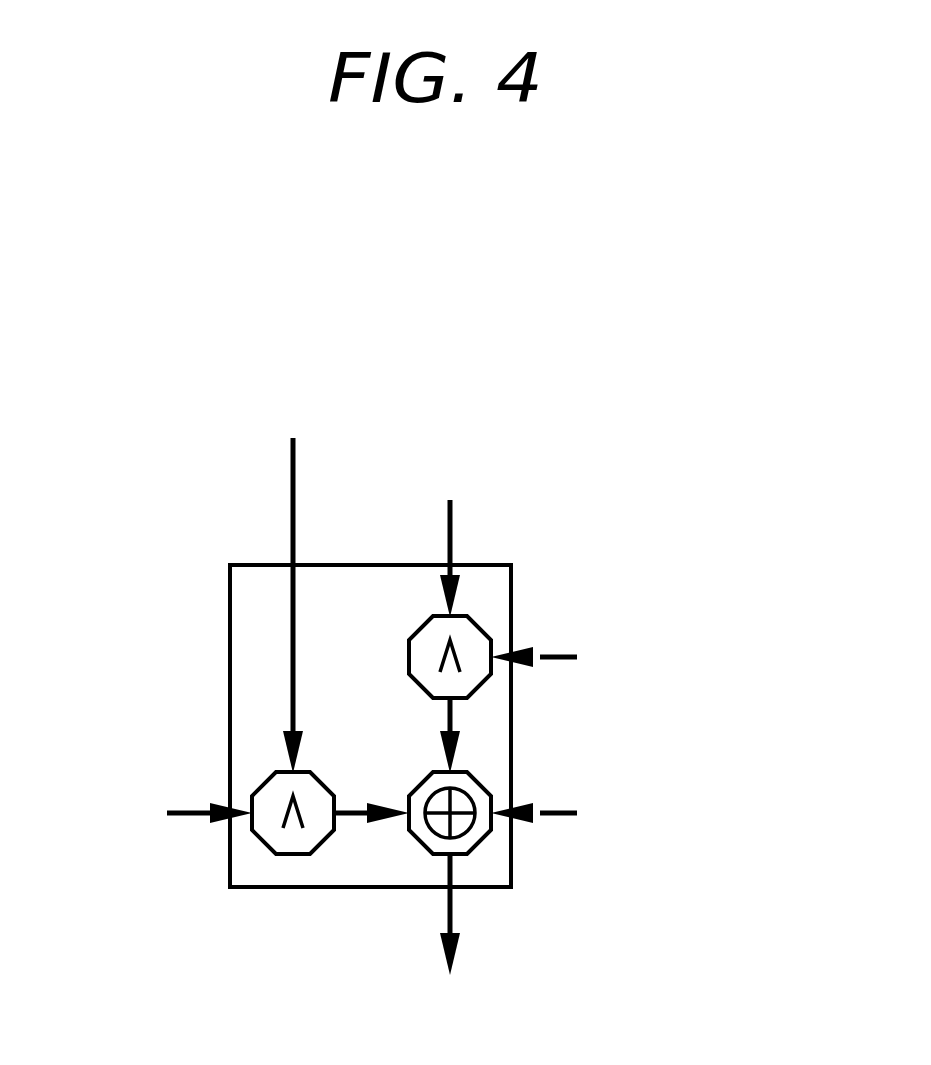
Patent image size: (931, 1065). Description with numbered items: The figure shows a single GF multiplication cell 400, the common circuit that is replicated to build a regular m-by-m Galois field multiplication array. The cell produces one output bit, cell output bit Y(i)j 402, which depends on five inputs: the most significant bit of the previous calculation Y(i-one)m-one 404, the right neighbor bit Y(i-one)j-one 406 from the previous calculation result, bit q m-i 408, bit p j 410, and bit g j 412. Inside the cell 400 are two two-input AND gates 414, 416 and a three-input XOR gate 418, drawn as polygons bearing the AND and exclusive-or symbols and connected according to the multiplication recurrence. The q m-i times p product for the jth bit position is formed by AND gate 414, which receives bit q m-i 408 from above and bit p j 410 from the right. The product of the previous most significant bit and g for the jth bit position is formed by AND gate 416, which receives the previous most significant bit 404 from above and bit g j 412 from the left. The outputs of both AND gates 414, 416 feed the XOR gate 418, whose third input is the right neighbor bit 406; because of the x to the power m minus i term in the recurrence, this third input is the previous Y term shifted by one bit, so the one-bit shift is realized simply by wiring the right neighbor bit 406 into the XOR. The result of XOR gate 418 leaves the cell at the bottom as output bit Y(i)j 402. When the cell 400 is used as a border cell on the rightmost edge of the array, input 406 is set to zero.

The GF multiplication cell 400 is at (588, 302).
The cell output bit Y(i)j 402 is at (453, 905).
The most significant bit of the previous calculation Y(i-1)m-1 404 is at (291, 538).
The right neighbor bit Y(i-1)j-1 406 is at (555, 816).
The bit q m-i 408 is at (452, 548).
The bit p j 410 is at (555, 655).
The bit g j 412 is at (180, 810).
The two-input AND gate 414 is at (410, 656).
The two-input AND gate 416 is at (264, 848).
The three-input XOR gate 418 is at (420, 848).